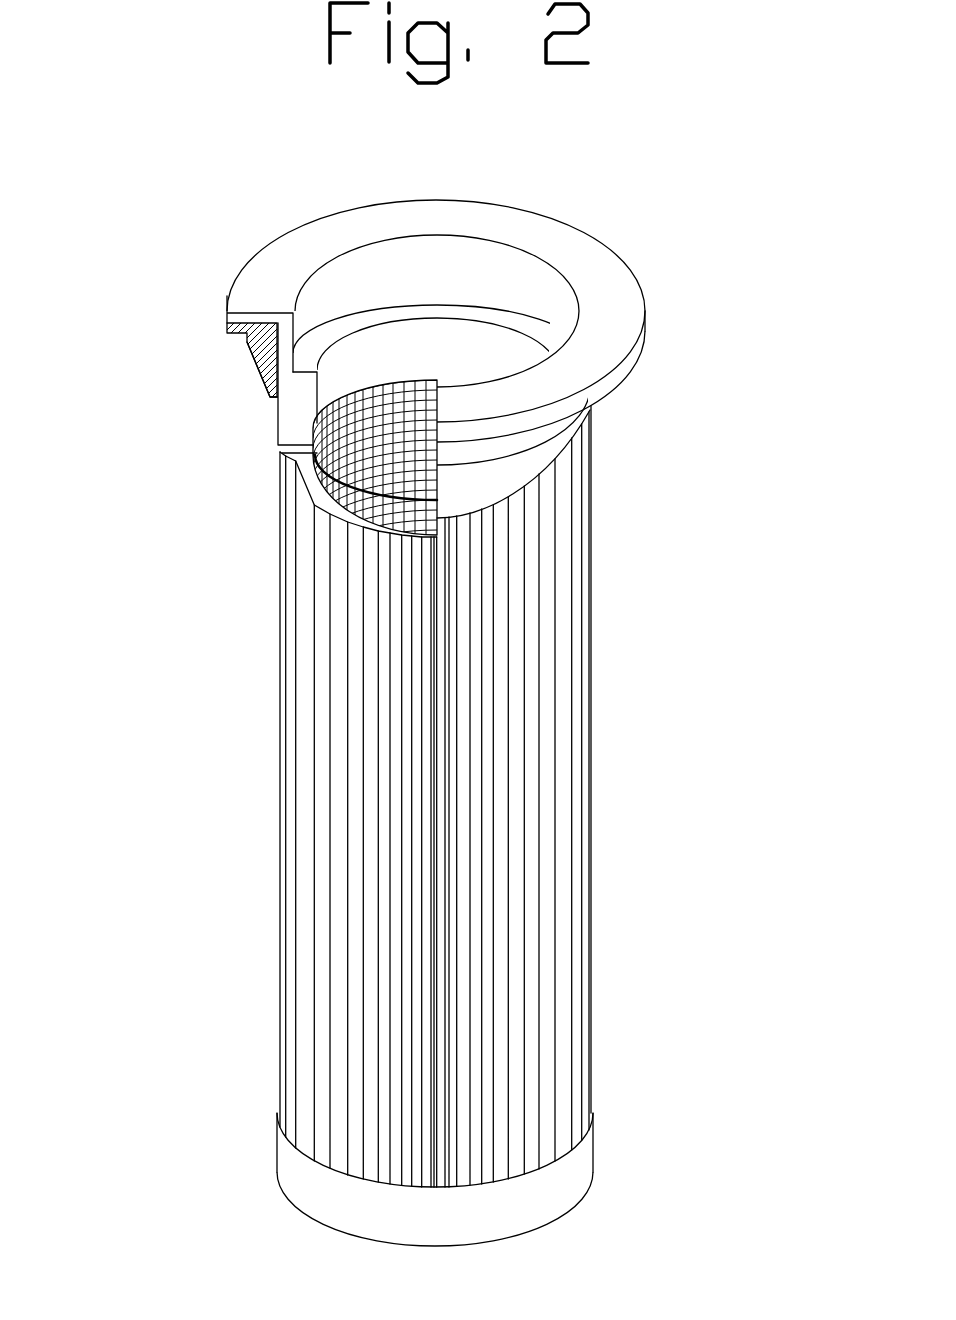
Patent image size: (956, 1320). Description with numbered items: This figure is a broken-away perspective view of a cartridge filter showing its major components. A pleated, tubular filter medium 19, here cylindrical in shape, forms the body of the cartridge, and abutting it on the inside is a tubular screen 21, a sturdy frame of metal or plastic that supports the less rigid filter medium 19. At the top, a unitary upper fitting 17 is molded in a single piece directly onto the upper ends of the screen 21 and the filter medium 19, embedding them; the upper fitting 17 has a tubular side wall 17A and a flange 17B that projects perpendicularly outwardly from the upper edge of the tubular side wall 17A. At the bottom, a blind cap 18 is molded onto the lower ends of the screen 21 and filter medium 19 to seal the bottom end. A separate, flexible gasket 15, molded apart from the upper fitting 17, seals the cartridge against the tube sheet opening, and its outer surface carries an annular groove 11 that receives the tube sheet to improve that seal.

The annular groove 11 is at (252, 348).
The gasket 15 is at (257, 367).
The unitary upper fitting 17 is at (283, 232).
The tubular side wall 17A is at (593, 413).
The flange 17B is at (640, 355).
The blind cap 18 is at (277, 1144).
The pleated tubular filter medium 19 is at (278, 790).
The tubular screen 21 is at (288, 469).